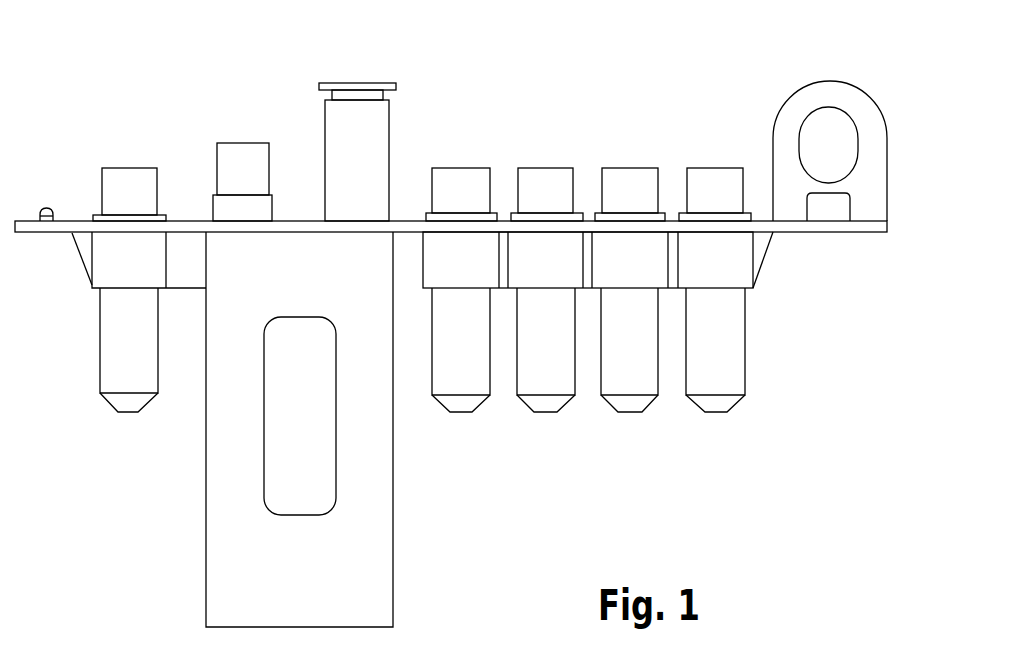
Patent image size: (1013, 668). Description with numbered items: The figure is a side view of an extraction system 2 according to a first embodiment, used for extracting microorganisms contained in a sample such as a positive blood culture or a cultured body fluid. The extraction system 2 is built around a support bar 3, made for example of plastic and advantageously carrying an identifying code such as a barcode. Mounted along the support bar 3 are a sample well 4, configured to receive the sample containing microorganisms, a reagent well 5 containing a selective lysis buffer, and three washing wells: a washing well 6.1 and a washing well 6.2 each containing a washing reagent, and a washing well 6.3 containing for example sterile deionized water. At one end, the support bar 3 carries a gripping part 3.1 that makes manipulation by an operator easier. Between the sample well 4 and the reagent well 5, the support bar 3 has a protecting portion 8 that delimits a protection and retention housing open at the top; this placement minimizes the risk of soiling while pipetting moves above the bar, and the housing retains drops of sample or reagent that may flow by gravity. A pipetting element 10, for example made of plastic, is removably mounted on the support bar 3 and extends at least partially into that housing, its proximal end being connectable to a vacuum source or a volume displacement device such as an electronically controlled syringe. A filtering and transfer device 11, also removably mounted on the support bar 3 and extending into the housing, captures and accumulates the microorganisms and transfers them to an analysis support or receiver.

The extraction system 2 is at (662, 48).
The support bar 3 is at (764, 238).
The gripping part 3.1 is at (846, 97).
The sample well 4 is at (118, 347).
The reagent well 5 is at (465, 378).
The washing well 6.1 is at (550, 370).
The washing well 6.2 is at (643, 370).
The washing well 6.3 is at (720, 363).
The protecting portion 8 is at (370, 580).
The pipetting element 10 is at (243, 160).
The filtering and transfer device 11 is at (349, 92).